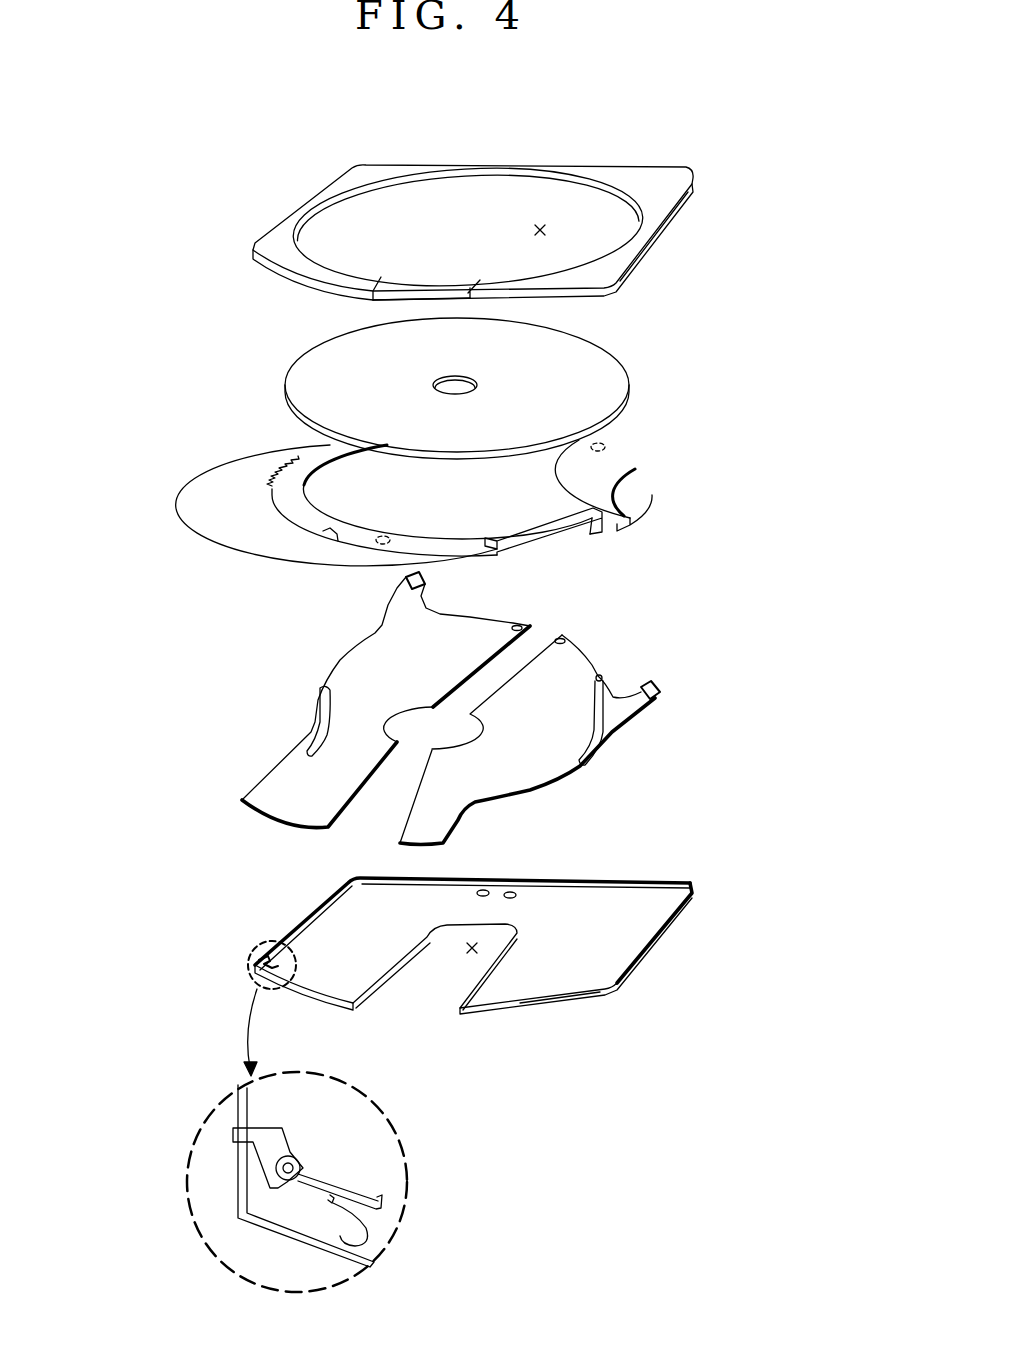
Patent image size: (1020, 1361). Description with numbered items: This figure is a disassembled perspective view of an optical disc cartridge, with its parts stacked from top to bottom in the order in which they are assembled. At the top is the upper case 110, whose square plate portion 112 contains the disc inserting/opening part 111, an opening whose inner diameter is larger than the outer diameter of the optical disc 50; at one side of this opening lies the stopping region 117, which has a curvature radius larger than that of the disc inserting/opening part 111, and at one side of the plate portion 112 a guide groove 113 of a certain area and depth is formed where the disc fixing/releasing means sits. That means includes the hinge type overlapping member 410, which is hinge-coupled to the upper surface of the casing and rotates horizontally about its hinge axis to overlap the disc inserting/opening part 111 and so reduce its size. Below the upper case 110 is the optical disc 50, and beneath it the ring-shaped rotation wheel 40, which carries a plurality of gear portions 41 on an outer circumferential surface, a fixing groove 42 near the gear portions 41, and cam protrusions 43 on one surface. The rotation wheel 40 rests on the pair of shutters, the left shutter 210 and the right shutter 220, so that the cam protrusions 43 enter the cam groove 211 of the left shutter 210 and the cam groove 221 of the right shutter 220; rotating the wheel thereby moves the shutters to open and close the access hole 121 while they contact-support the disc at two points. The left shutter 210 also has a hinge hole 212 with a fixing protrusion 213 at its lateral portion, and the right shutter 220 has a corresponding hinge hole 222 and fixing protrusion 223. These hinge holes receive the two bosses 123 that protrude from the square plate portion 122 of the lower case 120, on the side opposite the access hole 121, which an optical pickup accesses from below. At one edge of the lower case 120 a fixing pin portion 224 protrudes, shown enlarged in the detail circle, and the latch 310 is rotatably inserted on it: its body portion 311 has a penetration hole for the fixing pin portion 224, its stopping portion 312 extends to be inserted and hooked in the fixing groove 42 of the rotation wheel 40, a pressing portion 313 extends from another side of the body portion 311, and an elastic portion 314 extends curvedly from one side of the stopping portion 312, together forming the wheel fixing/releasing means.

The upper case 110 is at (481, 197).
The disc inserting/opening part 111 is at (545, 226).
The plate portion 112 is at (652, 188).
The guide groove 113 is at (380, 283).
The stopping region 117 is at (478, 170).
The hinge type overlapping member 410 is at (392, 302).
The optical disc 50 is at (638, 378).
The rotation wheel 40 is at (466, 511).
The gear portions 41 is at (272, 466).
The fixing groove 42 is at (328, 538).
The cam protrusions 43 is at (378, 546).
The left shutter 210 is at (367, 694).
The cam groove 211 is at (259, 707).
The hinge hole 212 is at (518, 624).
The fixing protrusion 213 is at (404, 578).
The right shutter 220 is at (599, 708).
The cam groove 221 is at (601, 676).
The hinge hole 222 is at (565, 637).
The fixing protrusion 223 is at (652, 686).
The fixing pin portion 224 is at (288, 1180).
The lower case 120 is at (504, 1079).
The access hole 121 is at (473, 955).
The plate portion 122 is at (553, 968).
The bosses 123 is at (512, 891).
The latch 310 is at (298, 1182).
The body portion 311 is at (280, 1158).
The stopping portion 312 is at (384, 1206).
The pressing portion 313 is at (232, 1140).
The elastic portion 314 is at (372, 1237).